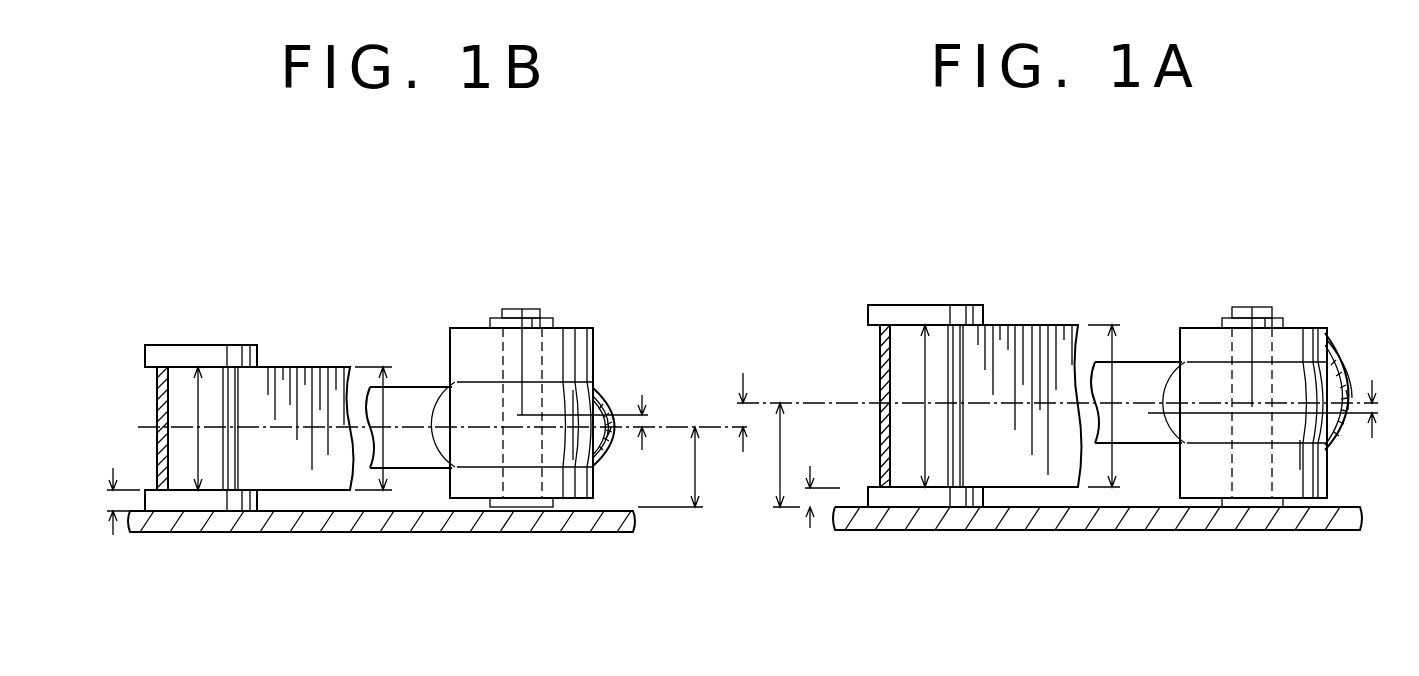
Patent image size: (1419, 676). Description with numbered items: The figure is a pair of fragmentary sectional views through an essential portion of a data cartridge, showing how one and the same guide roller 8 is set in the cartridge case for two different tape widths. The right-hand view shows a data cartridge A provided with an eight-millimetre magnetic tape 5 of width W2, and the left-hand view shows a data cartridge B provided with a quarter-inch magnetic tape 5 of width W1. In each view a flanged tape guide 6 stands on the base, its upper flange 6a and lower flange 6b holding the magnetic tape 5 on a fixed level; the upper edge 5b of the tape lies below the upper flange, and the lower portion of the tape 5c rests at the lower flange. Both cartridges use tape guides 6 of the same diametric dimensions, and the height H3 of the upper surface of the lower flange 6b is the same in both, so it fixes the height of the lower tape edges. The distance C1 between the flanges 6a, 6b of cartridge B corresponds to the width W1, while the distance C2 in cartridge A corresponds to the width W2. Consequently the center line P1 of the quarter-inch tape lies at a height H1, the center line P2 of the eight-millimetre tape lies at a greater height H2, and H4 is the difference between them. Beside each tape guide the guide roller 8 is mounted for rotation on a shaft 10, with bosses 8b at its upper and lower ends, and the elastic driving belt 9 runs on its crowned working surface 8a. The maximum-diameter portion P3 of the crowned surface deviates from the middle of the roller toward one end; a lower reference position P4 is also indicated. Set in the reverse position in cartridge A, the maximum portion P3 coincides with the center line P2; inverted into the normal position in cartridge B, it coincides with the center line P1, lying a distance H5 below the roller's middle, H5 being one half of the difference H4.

In FIG. 1B, the magnetic tape 5 is at (155, 403).
In FIG. 1A, the magnetic tape 5 is at (880, 368).
In FIG. 1B, the upper edge of the magnetic tape 5b is at (300, 368).
In FIG. 1A, the upper edge of the magnetic tape 5b is at (1035, 328).
In FIG. 1B, the lens barrel bottom portion 5c is at (310, 492).
In FIG. 1A, the lens barrel bottom portion 5c is at (1036, 490).
In FIG. 1B, the tape guide 6 is at (182, 383).
In FIG. 1A, the tape guide 6 is at (905, 368).
In FIG. 1B, the upper flange 6a is at (223, 355).
In FIG. 1A, the upper flange 6a is at (940, 313).
In FIG. 1B, the lower flange 6b is at (183, 500).
In FIG. 1A, the lower flange 6b is at (900, 497).
In FIG. 1B, the guide roller 8 is at (480, 353).
In FIG. 1A, the guide roller 8 is at (1302, 337).
In FIG. 1B, the crowned working surface 8a is at (593, 388).
In FIG. 1A, the crowned working surface 8a is at (1327, 355).
In FIG. 1B, the boss 8b is at (546, 375).
In FIG. 1A, the boss 8b is at (1222, 320).
In FIG. 1B, the driving belt 9 is at (612, 455).
In FIG. 1A, the driving belt 9 is at (1335, 368).
In FIG. 1B, the shaft 10 is at (523, 312).
In FIG. 1A, the shaft 10 is at (1252, 316).
In FIG. 1A, the data cartridge A is at (1098, 250).
In FIG. 1B, the data cartridge B is at (443, 250).
In FIG. 1B, the width of the quarter-inch magnetic tape W1 is at (370, 405).
In FIG. 1A, the width of the eight-millimetre magnetic tape W2 is at (1115, 378).
In FIG. 1B, the center line of the quarter-inch magnetic tape P1 is at (404, 423).
In FIG. 1A, the center line of the eight-millimetre magnetic tape P2 is at (803, 400).
In FIG. 1B, the maximum portion of the crowned working surface P3 is at (613, 446).
In FIG. 1A, the maximum portion of the crowned working surface P3 is at (1348, 395).
In FIG. 1B, the lens holder position P4 is at (573, 405).
In FIG. 1A, the lens holder position P4 is at (1300, 452).
In FIG. 1B, the height of the center line of the quarter-inch magnetic tape H1 is at (693, 466).
In FIG. 1A, the height of the center line of the eight-millimetre magnetic tape H2 is at (777, 452).
In FIG. 1B, the height of the upper surface of the lower flange H3 is at (122, 528).
In FIG. 1A, the height of the upper surface of the lower flange H3 is at (807, 497).
In FIG. 1B, the difference between the heights H1 and H2 H4 is at (738, 412).
In FIG. 1B, the distance of the maximum portion below the roller middle H5 is at (648, 415).
In FIG. 1A, the distance of the maximum portion below the roller middle H5 is at (1374, 416).
In FIG. 1B, the distance between flanges of the tape guide of cartridge B C1 is at (200, 450).
In FIG. 1A, the distance between flanges of the tape guide of cartridge A C2 is at (927, 440).